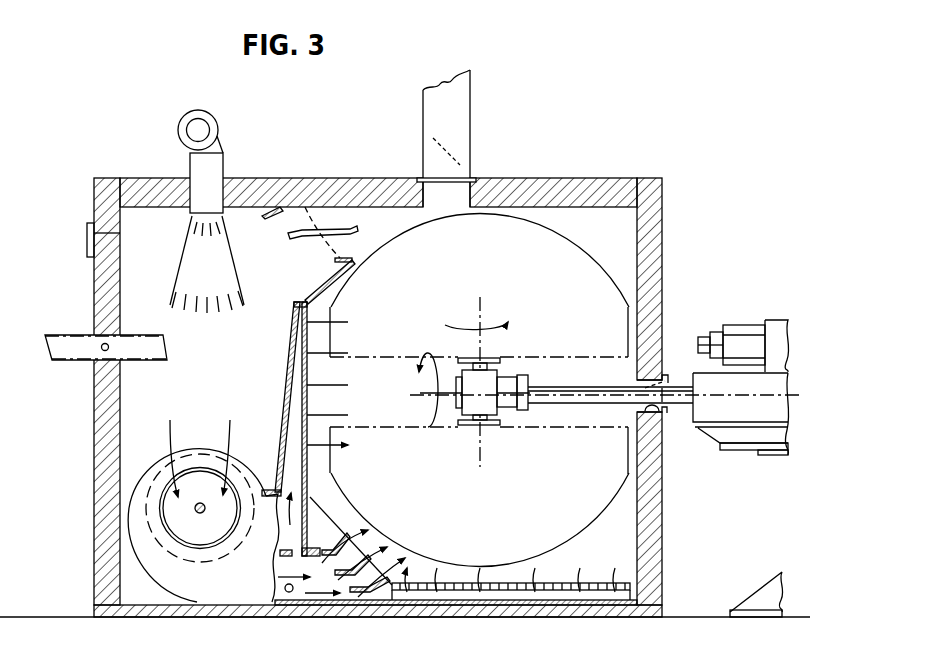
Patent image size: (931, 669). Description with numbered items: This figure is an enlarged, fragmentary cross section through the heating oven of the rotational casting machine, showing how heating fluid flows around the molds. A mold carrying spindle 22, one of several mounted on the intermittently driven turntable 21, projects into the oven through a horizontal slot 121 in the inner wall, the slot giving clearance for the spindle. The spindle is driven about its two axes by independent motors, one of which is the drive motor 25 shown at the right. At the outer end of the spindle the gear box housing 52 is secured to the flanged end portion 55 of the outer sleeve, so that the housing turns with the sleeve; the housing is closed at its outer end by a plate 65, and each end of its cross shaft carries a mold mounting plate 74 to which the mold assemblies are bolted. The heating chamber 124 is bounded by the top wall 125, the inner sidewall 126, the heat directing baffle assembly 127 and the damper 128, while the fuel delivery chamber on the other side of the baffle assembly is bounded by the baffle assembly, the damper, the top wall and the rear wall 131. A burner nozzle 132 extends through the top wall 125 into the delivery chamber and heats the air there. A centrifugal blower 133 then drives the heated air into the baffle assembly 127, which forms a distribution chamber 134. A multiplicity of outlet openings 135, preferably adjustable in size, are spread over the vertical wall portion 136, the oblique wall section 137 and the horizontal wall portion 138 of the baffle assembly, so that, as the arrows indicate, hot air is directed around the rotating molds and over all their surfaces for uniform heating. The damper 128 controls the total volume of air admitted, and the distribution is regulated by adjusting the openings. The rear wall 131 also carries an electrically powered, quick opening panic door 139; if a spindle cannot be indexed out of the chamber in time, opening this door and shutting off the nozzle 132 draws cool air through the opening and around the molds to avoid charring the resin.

The turntable 21 is at (715, 446).
The mold carrying spindle 22 is at (658, 378).
The second drive motor 25 is at (750, 325).
The gear box housing 52 is at (507, 377).
The flanged end portion 55 is at (540, 387).
The plate 65 is at (457, 398).
The mold mounting plate 74 is at (492, 357).
The horizontal slot 121 is at (650, 403).
The heating chamber 124 is at (598, 215).
The top wall 125 is at (525, 178).
The inner sidewall 126 is at (663, 252).
The heat directing baffle assembly 127 is at (292, 372).
The damper 128 is at (300, 240).
The rear wall 131 is at (95, 494).
The burner nozzle 132 is at (220, 168).
The centrifugal blower 133 is at (198, 590).
The distribution chamber 134 is at (290, 442).
The outlet openings 135 is at (310, 445).
The vertical wall portion 136 is at (305, 408).
The oblique wall section 137 is at (335, 517).
The horizontal wall portion 138 is at (452, 583).
The panic door 139 is at (95, 317).